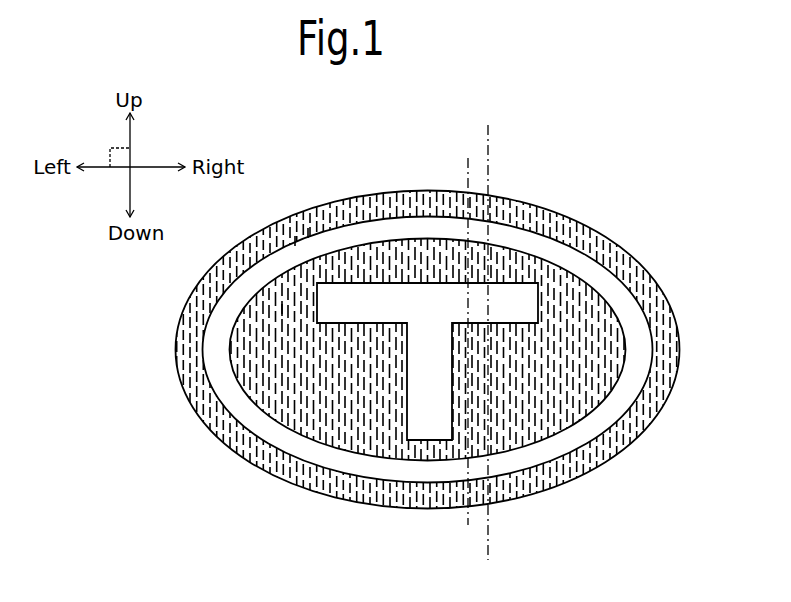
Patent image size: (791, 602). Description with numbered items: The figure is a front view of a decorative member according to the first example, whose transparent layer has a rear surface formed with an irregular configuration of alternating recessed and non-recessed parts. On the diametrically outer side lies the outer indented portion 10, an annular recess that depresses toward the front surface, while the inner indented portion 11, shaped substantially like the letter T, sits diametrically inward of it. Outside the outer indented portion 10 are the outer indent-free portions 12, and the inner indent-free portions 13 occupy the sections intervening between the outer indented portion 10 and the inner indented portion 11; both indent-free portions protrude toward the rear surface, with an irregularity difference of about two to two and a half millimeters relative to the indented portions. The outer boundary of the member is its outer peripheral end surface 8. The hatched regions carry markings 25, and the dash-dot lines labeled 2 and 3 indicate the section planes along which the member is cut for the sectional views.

The outer peripheral end surface 8 is at (645, 268).
The outer indented portion 10 is at (553, 249).
The inner indented portion 11 is at (378, 292).
The outer indent-free portions 12 is at (524, 212).
The inner indent-free portions 13 is at (588, 347).
The grooves 25 is at (282, 298).
The section line for FIG. 2 is at (467, 344).
The section line for FIG. 3 is at (489, 343).